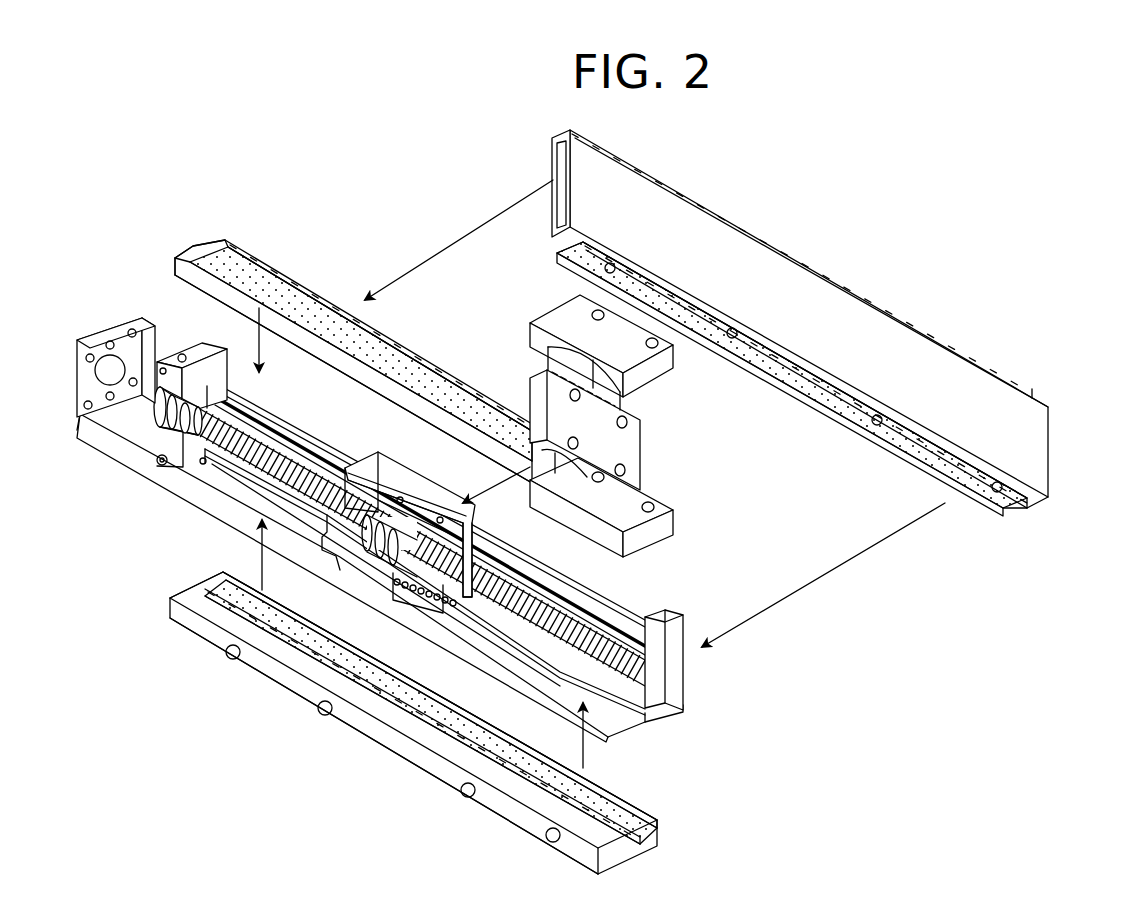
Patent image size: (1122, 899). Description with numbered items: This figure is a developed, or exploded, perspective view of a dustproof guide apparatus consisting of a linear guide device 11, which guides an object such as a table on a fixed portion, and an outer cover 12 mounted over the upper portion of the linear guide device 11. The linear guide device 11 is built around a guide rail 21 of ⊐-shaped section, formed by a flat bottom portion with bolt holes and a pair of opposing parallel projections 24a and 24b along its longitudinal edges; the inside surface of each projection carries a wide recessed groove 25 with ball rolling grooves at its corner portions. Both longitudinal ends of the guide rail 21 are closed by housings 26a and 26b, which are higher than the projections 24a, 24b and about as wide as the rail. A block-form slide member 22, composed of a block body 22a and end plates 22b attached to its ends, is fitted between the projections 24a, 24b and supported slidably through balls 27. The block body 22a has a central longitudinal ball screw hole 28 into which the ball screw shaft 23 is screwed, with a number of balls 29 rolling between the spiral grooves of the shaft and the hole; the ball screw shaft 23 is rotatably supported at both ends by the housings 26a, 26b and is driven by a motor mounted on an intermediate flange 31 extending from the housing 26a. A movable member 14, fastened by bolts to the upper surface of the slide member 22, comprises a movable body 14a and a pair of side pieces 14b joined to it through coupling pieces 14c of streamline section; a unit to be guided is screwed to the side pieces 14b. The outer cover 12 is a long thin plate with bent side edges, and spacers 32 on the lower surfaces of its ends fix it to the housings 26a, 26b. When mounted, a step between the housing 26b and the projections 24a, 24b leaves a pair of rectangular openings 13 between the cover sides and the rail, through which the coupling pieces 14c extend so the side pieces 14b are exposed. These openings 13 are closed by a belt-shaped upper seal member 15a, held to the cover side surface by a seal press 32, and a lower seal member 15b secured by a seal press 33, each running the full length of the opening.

The linear guide device 11 is at (212, 533).
The outer cover 12 is at (815, 346).
The openings 13 is at (643, 695).
The movable member 14 is at (635, 426).
The movable body 14a is at (637, 427).
The side pieces 14b is at (667, 358).
The coupling pieces 14c is at (622, 393).
The upper seal member 15a is at (997, 367).
The lower seal member 15b is at (657, 823).
The guide rail 21 is at (443, 558).
The slide member 22 is at (434, 520).
The block body 22a is at (400, 513).
The end plates 22b is at (350, 478).
The ball screw shaft 23 is at (273, 447).
The projection 24a is at (548, 598).
The projection 24b is at (558, 660).
The recessed grooves 25 is at (603, 617).
The housing 26a is at (213, 360).
The housing 26b is at (670, 618).
The balls 27 is at (395, 578).
The ball screw hole 28 is at (437, 522).
The balls 29 is at (345, 560).
The intermediate flange 31 is at (118, 340).
The spacers 32 is at (557, 167).
The seal press 33 is at (456, 728).